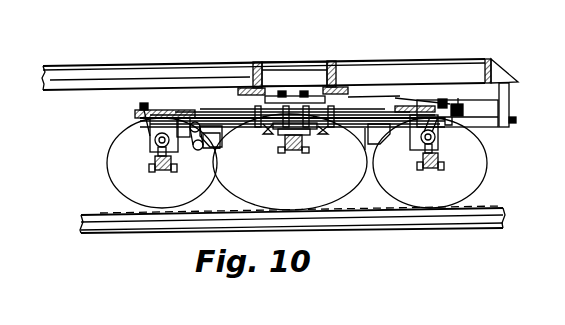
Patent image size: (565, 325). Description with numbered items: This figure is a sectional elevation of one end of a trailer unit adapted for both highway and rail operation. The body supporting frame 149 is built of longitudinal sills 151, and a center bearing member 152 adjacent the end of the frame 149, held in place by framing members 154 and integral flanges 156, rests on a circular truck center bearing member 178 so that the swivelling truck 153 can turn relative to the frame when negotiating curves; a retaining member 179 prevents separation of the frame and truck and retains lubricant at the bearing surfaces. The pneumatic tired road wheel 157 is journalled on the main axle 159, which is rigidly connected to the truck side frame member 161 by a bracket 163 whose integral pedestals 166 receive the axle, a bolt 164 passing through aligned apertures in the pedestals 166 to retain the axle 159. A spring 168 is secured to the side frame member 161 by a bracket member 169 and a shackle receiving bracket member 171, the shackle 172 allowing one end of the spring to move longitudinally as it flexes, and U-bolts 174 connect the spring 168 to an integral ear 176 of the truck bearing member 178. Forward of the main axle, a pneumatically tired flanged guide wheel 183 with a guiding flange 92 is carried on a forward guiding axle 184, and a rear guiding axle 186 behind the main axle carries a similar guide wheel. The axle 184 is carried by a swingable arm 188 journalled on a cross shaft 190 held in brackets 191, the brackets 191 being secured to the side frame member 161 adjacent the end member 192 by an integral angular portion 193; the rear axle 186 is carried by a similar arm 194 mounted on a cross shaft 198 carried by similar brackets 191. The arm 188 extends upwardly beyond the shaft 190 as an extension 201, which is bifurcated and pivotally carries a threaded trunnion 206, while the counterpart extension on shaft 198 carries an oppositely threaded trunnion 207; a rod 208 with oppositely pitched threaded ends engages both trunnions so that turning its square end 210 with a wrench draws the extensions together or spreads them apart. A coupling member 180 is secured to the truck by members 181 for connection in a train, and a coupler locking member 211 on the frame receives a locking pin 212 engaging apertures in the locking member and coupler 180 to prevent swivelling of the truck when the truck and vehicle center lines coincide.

The guiding flange 92 is at (433, 210).
The body supporting frame 149 is at (138, 65).
The longitudinal framing members or sills 151 is at (67, 79).
The center bearing member 152 is at (350, 97).
The swivelling truck 153 is at (155, 110).
The framing member 154 is at (305, 85).
The integral flange 156 is at (333, 84).
The pneumatic tired road wheel 157 is at (323, 203).
The main axle 159 is at (295, 150).
The truck side frame member 161 is at (365, 128).
The bracket 163 is at (273, 133).
The bolt 164 is at (309, 149).
The axle receiving guide or pedestal 166 is at (300, 141).
The spring 168 is at (212, 117).
The bracket member 169 is at (392, 128).
The shackle receiving bracket member 171 is at (220, 146).
The shackle 172 is at (213, 152).
The U-bolt 174 is at (283, 130).
The integral ear 176 is at (278, 99).
The truck center bearing member 178 is at (238, 90).
The retaining member 179 is at (394, 114).
The coupling member 180 is at (514, 121).
The member 181 is at (505, 103).
The pneumatically tired flanged guide wheel 183 is at (477, 179).
The forward guiding axle 184 is at (430, 160).
The rear guiding axle 186 is at (168, 168).
The swingable arm 188 is at (435, 146).
The cross shaft 190 is at (436, 137).
The bracket 191 is at (170, 146).
The end member 192 is at (495, 116).
The integral angular portion 193 is at (437, 103).
The hanger link 194 is at (158, 152).
The cross shaft 198 is at (155, 140).
The extension 201 is at (460, 111).
The threaded trunnion 206 is at (442, 100).
The threaded trunnion 207 is at (140, 108).
The rod 208 is at (403, 107).
The square end 210 is at (458, 98).
The coupler locking member 211 is at (492, 68).
The locking pin 212 is at (512, 88).